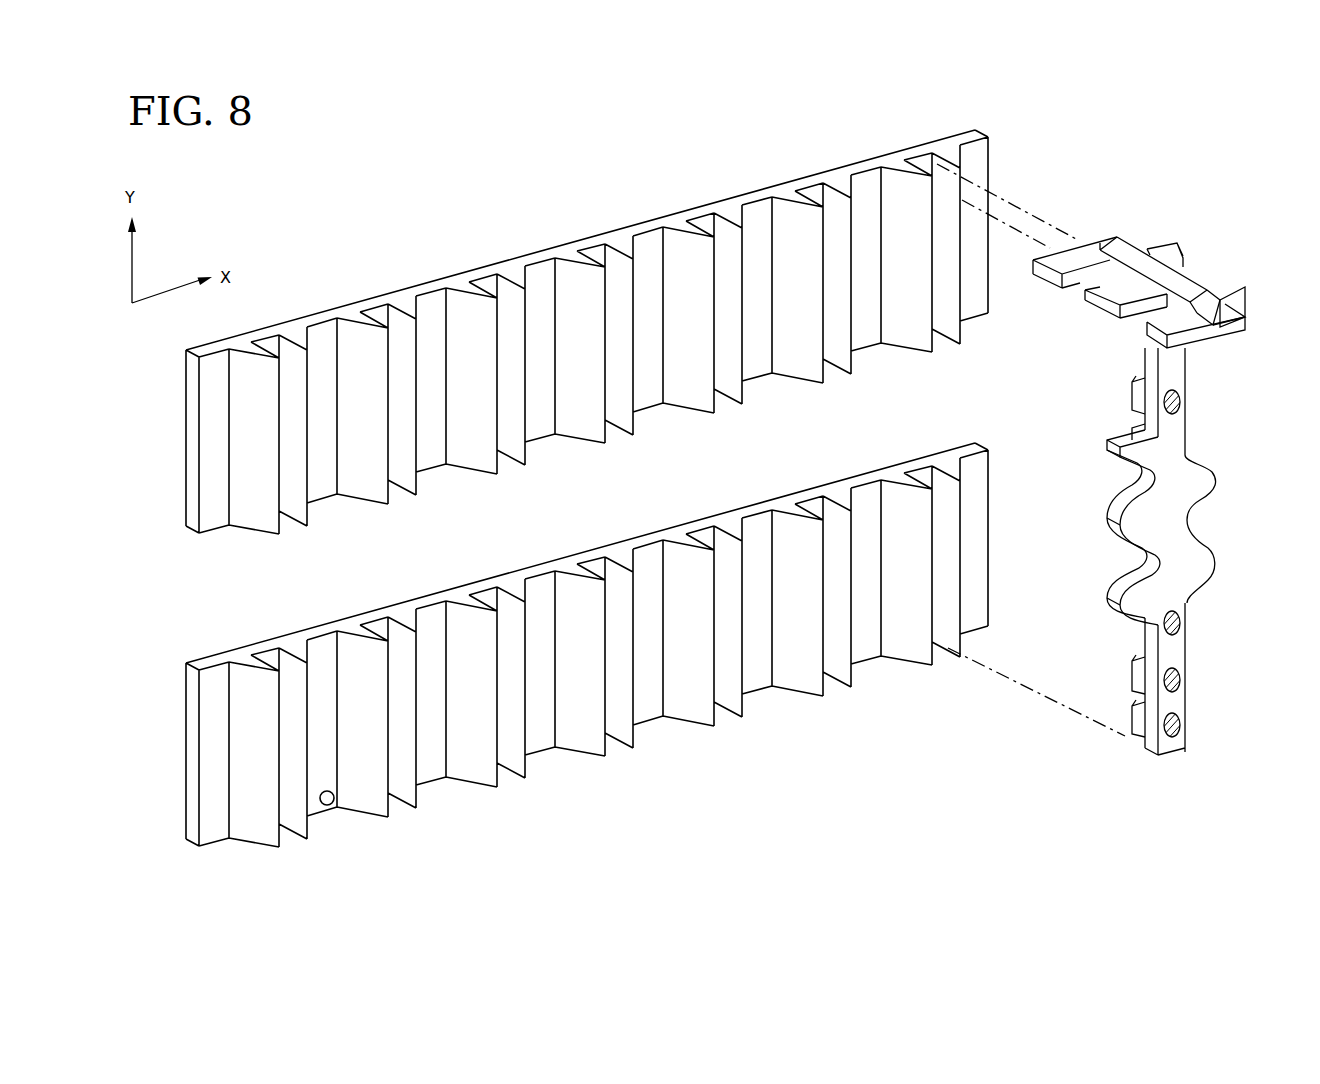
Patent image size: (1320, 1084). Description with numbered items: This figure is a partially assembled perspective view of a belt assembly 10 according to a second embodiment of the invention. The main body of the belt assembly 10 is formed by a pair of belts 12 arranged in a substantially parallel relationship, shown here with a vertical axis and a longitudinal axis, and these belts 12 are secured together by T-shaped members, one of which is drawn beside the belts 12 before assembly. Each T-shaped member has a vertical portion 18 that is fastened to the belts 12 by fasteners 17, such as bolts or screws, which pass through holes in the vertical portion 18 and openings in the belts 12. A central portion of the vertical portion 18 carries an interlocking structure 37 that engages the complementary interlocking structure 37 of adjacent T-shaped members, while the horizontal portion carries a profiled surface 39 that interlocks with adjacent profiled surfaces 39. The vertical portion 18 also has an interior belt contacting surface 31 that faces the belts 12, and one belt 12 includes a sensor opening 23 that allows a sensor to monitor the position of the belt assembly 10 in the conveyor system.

The belt assembly 10 is at (887, 792).
The belt 12 is at (618, 505).
The fastener 17 is at (1183, 621).
The vertical portion 18 is at (1138, 481).
The sensor opening 23 is at (333, 805).
The belt contacting surface 31 is at (616, 460).
The interlocking structure 37 is at (1197, 485).
The profiled surface 39 is at (1232, 288).